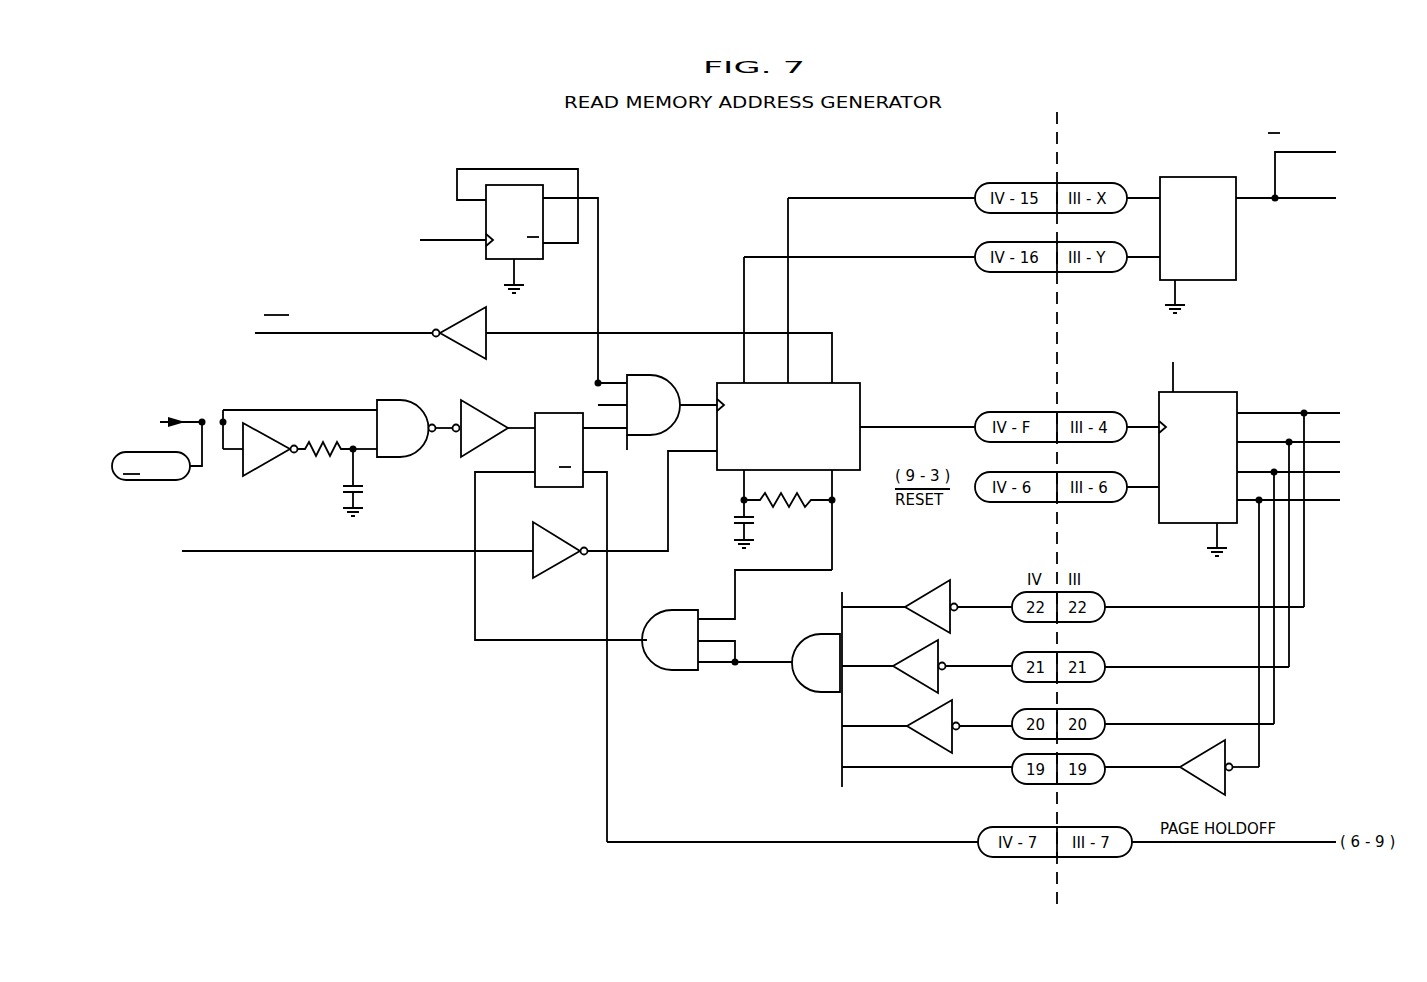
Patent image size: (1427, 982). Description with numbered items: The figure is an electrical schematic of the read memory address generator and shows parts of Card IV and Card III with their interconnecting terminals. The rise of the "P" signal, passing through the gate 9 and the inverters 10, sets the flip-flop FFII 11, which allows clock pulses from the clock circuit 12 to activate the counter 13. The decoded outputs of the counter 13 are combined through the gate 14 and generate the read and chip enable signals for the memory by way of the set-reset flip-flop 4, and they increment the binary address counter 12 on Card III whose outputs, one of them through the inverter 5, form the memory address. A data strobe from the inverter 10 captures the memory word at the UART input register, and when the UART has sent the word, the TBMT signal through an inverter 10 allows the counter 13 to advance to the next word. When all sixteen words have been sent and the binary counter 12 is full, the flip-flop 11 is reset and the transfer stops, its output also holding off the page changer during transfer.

The set-reset flip-flop (read chip enable) 4 is at (1262, 195).
The inverter 5 is at (1206, 768).
The NAND gate / inverter 9 is at (562, 511).
The inverter 10 is at (562, 530).
The D flip-flop 11 is at (466, 505).
The AND gate / counter 12 is at (1000, 556).
The monostable multivibrator 13 is at (835, 384).
The AND gate 14 is at (894, 689).